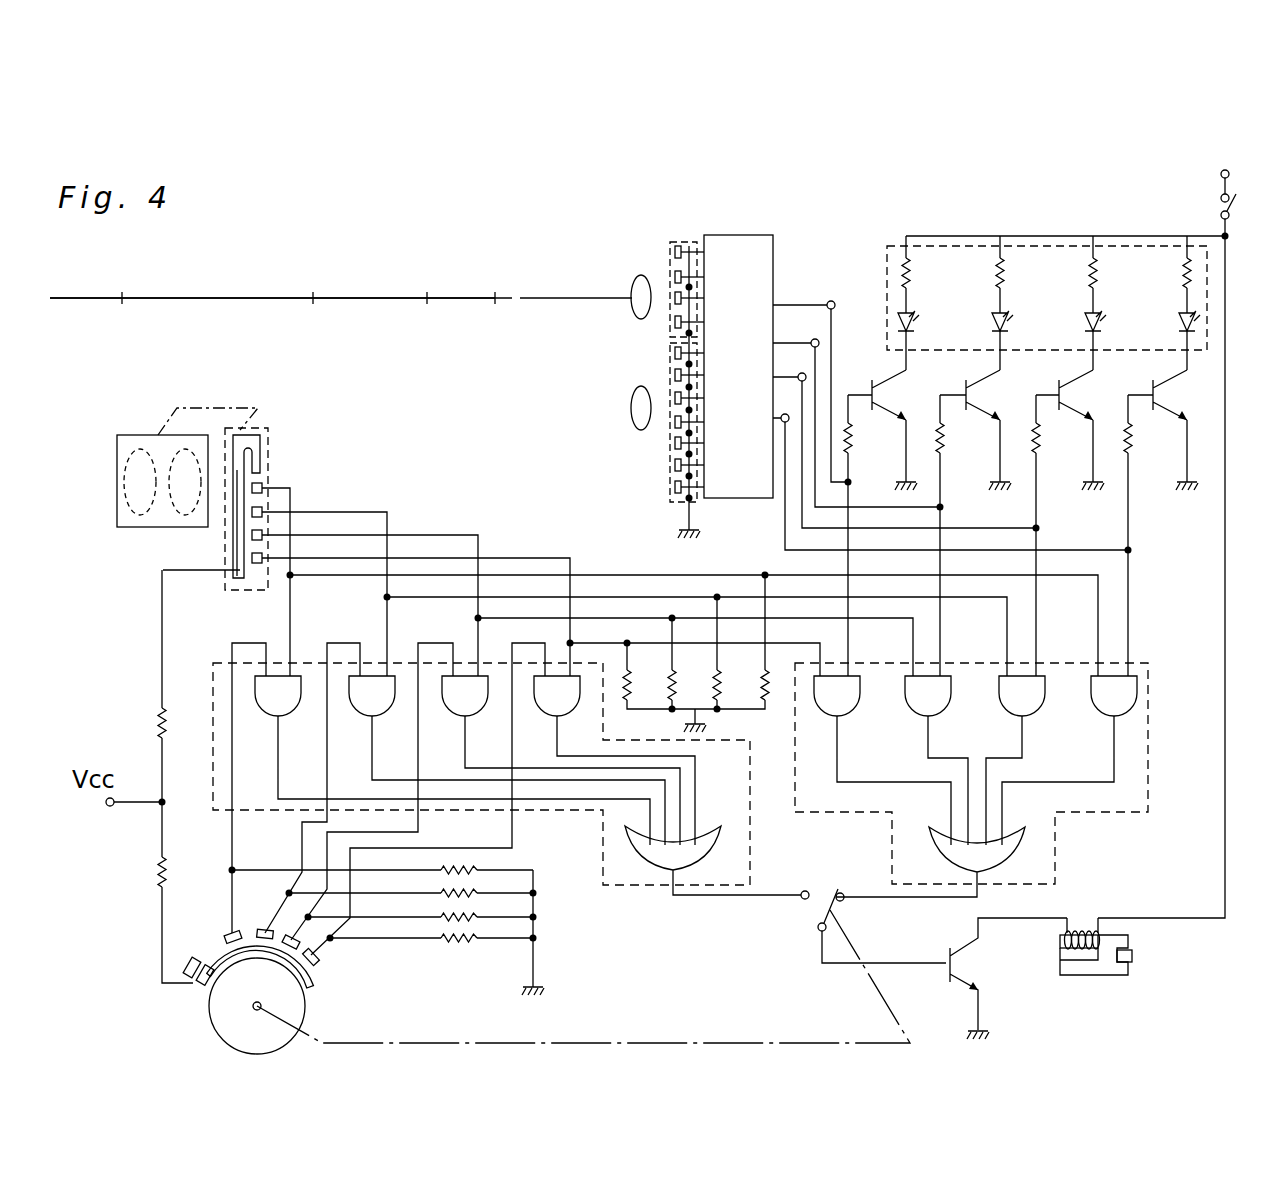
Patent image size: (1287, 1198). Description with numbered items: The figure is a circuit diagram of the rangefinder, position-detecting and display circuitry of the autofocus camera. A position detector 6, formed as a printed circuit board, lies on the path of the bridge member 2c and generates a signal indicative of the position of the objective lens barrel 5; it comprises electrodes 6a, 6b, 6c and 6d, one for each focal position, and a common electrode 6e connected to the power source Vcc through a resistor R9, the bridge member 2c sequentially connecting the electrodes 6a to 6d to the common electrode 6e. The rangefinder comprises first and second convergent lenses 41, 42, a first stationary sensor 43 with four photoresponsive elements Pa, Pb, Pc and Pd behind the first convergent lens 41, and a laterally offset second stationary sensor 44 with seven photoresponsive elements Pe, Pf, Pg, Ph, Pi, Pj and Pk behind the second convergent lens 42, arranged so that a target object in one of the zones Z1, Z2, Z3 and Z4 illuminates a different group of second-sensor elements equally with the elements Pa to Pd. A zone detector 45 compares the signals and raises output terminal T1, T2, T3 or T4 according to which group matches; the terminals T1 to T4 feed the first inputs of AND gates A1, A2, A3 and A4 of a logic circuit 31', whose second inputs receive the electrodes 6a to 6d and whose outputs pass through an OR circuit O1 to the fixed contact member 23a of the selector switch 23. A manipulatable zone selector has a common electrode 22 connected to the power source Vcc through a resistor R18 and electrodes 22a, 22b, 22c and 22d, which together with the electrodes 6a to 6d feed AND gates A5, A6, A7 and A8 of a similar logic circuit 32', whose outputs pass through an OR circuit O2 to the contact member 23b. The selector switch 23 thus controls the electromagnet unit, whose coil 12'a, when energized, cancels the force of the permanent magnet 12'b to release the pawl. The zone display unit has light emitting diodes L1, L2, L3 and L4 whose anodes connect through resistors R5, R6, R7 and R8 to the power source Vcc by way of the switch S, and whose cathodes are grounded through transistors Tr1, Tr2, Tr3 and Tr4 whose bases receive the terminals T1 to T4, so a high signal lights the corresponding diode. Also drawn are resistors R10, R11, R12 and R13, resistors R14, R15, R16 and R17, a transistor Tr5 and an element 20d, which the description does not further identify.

The objective lens barrel 5 is at (140, 528).
The position detector 6 is at (272, 425).
The bridge member 2c is at (256, 446).
The electrode 6a is at (260, 486).
The electrode 6b is at (260, 510).
The electrode 6c is at (260, 534).
The electrode 6d is at (257, 565).
The common electrode 6e is at (240, 549).
The first convergent lens 41 is at (639, 277).
The second convergent lens 42 is at (632, 412).
The first stationary sensor 43 is at (698, 241).
The second stationary sensor 44 is at (698, 503).
The zone detector 45 is at (774, 244).
The photoresponsive element Pa is at (676, 244).
The photoresponsive element Pb is at (675, 275).
The photoresponsive element Pc is at (675, 297).
The photoresponsive element Pd is at (675, 322).
The photoresponsive element Pe is at (675, 353).
The photoresponsive element Pf is at (675, 375).
The photoresponsive element Pg is at (675, 398).
The photoresponsive element Ph is at (675, 422).
The photoresponsive element Pi is at (675, 443).
The photoresponsive element Pj is at (675, 465).
The photoresponsive element Pk is at (675, 488).
The output terminal T1 is at (786, 414).
The output terminal T2 is at (803, 373).
The output terminal T3 is at (816, 339).
The output terminal T4 is at (840, 290).
The zone Z1 is at (461, 280).
The zone Z2 is at (370, 280).
The zone Z3 is at (217, 280).
The zone Z4 is at (86, 280).
The power source Vcc is at (1194, 180).
The switch S is at (1220, 211).
The resistor R5 is at (1190, 280).
The resistor R6 is at (1095, 280).
The resistor R7 is at (1002, 280).
The resistor R8 is at (908, 280).
The resistor R9 is at (160, 728).
The resistor R10 is at (770, 688).
The resistor R11 is at (722, 688).
The resistor R12 is at (677, 688).
The resistor R13 is at (650, 672).
The resistor R14 is at (470, 938).
The resistor R15 is at (470, 917).
The resistor R16 is at (470, 893).
The resistor R17 is at (470, 870).
The resistor R18 is at (160, 870).
The light emitting diode L1 is at (1191, 322).
The light emitting diode L2 is at (1097, 322).
The light emitting diode L3 is at (1004, 322).
The light emitting diode L4 is at (910, 322).
The transistor Tr1 is at (1167, 430).
The transistor Tr2 is at (1074, 430).
The transistor Tr3 is at (980, 430).
The transistor Tr4 is at (887, 430).
The transistor Tr5 is at (1008, 978).
The AND gate A1 is at (1122, 704).
The AND gate A2 is at (1038, 704).
The AND gate A3 is at (942, 704).
The AND gate A4 is at (850, 704).
The AND gate A5 is at (292, 705).
The AND gate A6 is at (362, 707).
The AND gate A7 is at (456, 705).
The AND gate A8 is at (546, 705).
The OR circuit O1 is at (1012, 861).
The OR circuit O2 is at (708, 860).
The logic circuit 31' is at (979, 773).
The logic circuit 32' is at (481, 808).
The common electrode 22 is at (314, 988).
The electrode 22a is at (232, 931).
The electrode 22b is at (265, 930).
The electrode 22c is at (298, 946).
The electrode 22d is at (318, 962).
The rotary disk 20d is at (254, 1008).
The selector switch 23 is at (823, 905).
The fixed contact member 23a is at (843, 901).
The contact member 23b is at (803, 899).
The coil 12'a is at (1119, 925).
The permanent magnet 12'b is at (1162, 960).